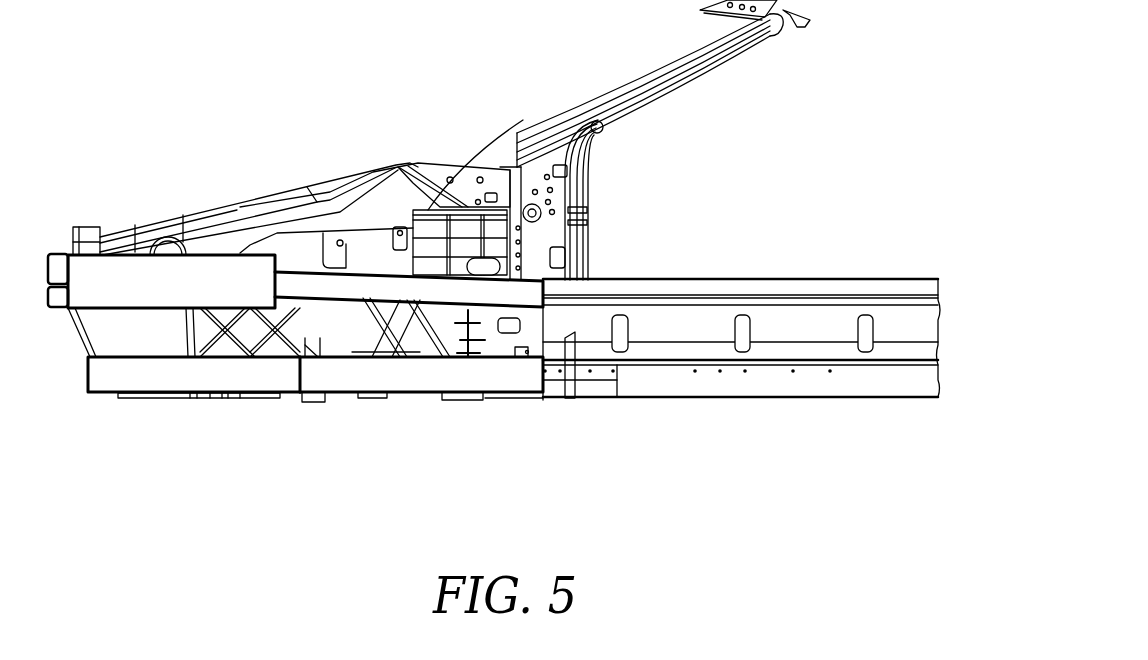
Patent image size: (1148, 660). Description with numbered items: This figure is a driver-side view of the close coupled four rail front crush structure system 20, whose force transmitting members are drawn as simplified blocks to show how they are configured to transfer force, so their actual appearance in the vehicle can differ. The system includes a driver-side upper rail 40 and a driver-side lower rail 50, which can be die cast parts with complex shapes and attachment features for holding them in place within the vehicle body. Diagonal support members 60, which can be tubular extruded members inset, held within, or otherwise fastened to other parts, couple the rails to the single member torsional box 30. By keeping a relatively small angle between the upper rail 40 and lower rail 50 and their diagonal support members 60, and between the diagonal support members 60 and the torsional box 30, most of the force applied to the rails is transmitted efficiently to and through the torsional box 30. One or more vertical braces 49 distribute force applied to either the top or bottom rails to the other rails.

The front crush structure system 20 is at (482, 394).
The single member torsional box 30 is at (722, 280).
The driver-side upper rail 40 is at (138, 275).
The vertical brace 49 is at (80, 337).
The driver-side lower rail 50 is at (195, 378).
The diagonal support members 60 is at (378, 288).